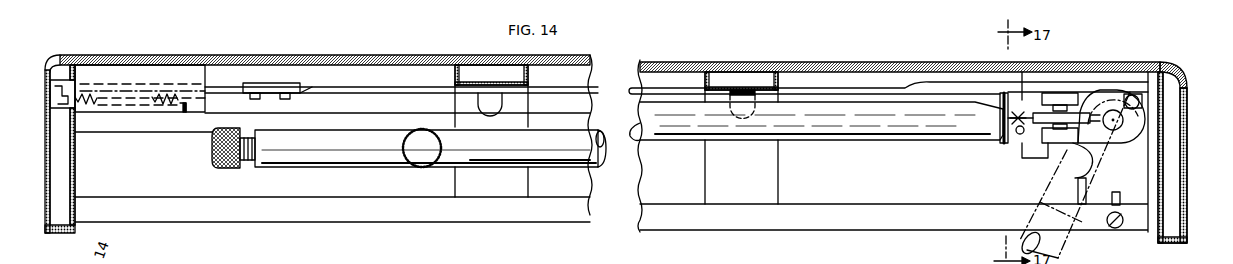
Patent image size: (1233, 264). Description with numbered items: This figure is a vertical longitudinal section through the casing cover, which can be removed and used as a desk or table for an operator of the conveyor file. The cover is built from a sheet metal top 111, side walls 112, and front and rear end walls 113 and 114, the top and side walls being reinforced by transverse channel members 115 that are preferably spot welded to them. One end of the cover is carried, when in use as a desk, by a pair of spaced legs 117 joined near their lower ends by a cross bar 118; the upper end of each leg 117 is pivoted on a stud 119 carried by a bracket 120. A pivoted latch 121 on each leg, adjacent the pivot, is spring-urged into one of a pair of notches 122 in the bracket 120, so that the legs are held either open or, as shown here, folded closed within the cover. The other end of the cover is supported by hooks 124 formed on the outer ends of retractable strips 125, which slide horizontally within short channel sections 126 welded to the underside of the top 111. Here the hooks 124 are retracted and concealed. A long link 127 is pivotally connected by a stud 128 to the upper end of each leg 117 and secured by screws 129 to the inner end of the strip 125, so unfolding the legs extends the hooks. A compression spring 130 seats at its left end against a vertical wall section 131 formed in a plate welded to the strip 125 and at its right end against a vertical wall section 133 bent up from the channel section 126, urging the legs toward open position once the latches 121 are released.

The sheet metal top 111 is at (832, 62).
The side walls 112 is at (897, 173).
The front end wall 113 is at (48, 162).
The rear end wall 114 is at (1183, 183).
The transverse channel members 115 is at (455, 70).
The legs 117 is at (808, 128).
The cross bar 118 is at (408, 145).
The stud 119 is at (1121, 120).
The bracket 120 is at (1133, 165).
The latch 121 is at (1008, 118).
The notches 122 is at (1121, 196).
The hook 124 is at (50, 100).
The retractable strip 125 is at (228, 87).
The channel section 126 is at (185, 75).
The link 127 is at (418, 90).
The stud 128 is at (1129, 100).
The screws 129 is at (255, 100).
The compression spring 130 is at (145, 107).
The vertical wall section 131 is at (65, 113).
The vertical wall section 133 is at (190, 115).